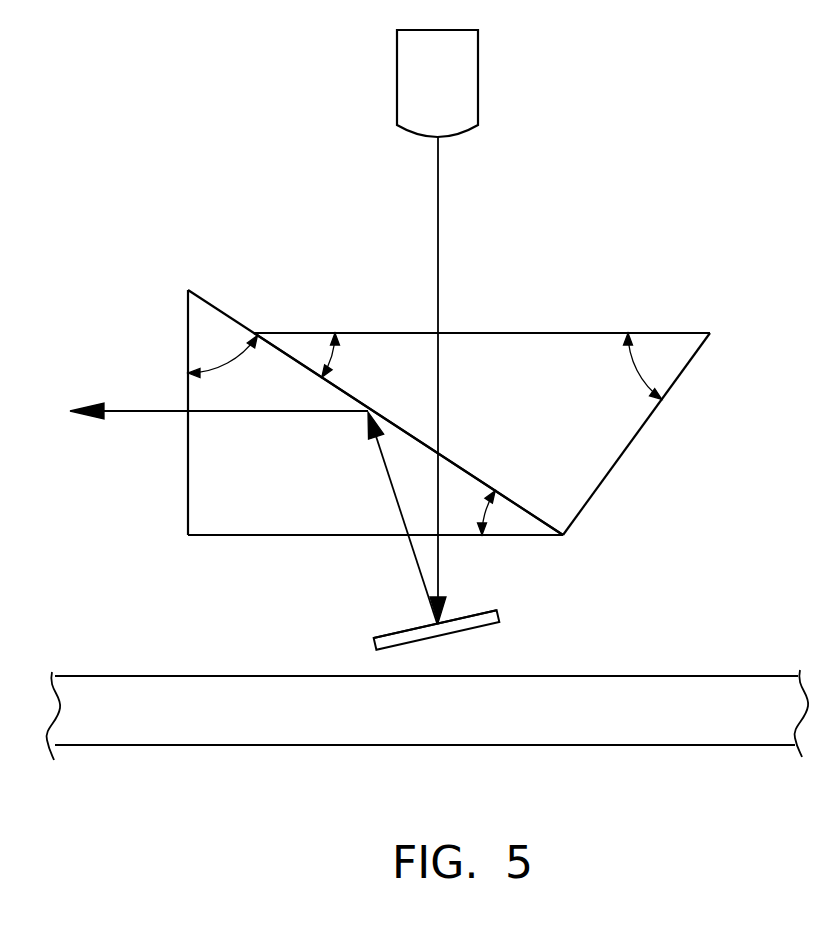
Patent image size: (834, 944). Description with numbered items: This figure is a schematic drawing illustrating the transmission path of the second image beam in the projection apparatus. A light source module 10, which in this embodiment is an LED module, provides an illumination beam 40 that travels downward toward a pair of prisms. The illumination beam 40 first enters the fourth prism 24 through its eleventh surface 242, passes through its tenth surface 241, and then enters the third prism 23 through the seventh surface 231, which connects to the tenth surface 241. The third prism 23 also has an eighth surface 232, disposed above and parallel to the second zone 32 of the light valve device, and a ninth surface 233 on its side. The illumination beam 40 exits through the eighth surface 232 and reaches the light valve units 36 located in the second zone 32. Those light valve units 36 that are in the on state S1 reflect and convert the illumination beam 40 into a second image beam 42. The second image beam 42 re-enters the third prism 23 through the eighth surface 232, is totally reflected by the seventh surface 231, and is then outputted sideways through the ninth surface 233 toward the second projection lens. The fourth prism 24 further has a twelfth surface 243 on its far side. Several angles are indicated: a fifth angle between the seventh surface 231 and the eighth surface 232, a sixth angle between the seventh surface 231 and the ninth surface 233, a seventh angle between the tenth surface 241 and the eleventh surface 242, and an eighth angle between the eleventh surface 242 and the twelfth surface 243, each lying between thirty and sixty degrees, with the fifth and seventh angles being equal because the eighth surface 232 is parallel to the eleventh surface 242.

The light source module 10 is at (422, 95).
The illumination beam 40 is at (439, 193).
The third prism 23 is at (330, 426).
The seventh surface 231 is at (237, 321).
The eighth surface 232 is at (275, 537).
The ninth surface 233 is at (188, 470).
The fourth prism 24 is at (482, 401).
The tenth surface 241 is at (407, 431).
The eleventh surface 242 is at (556, 333).
The twelfth surface 243 is at (627, 452).
The second image beam 42 is at (390, 475).
The light valve unit 36 is at (490, 618).
The on state S1 is at (388, 643).
The second zone 32 is at (474, 732).